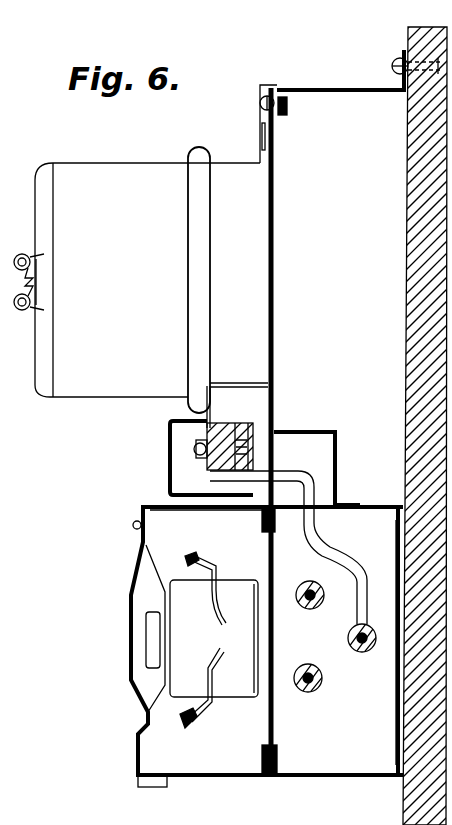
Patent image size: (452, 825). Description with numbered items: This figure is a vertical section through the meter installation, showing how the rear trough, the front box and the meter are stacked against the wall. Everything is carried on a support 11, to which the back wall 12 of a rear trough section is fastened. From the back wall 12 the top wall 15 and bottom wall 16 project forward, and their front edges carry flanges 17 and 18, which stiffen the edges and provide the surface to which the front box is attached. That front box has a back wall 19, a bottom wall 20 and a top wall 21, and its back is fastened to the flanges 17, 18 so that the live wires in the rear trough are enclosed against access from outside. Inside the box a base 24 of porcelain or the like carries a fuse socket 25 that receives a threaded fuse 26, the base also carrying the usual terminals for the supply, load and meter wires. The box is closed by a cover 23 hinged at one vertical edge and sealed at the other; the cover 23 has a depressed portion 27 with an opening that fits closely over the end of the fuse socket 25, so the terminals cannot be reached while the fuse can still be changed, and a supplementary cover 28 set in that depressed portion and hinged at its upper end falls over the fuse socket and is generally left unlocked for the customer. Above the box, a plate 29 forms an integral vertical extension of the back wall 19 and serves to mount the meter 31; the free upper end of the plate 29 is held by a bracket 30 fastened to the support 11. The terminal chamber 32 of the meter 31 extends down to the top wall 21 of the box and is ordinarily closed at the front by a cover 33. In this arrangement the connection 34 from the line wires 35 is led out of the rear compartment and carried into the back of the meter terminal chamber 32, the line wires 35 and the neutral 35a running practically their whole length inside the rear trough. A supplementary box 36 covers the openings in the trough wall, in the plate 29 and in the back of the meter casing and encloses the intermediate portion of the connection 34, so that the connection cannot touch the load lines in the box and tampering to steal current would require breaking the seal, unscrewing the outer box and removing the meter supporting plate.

The support 11 is at (408, 118).
The back wall 12 is at (403, 693).
The top wall 15 is at (340, 778).
The bottom wall 16 is at (368, 507).
The flange 17 is at (278, 762).
The flange 18 is at (276, 527).
The back wall 19 is at (276, 722).
The bottom wall 20 is at (202, 778).
The top wall 21 is at (175, 510).
The cover 23 is at (142, 758).
The base 24 is at (238, 698).
The fuse socket 25 is at (214, 638).
The threaded fuse 26 is at (147, 625).
The depressed portion 27 is at (168, 700).
The supplementary cover 28 is at (132, 655).
The plate 29 is at (277, 203).
The bracket 30 is at (300, 92).
The meter 31 is at (42, 190).
The terminal chamber 32 is at (248, 405).
The cover 33 is at (169, 450).
The connection 34 is at (330, 548).
The line wire 35 is at (327, 567).
The neutral 35a is at (348, 640).
The supplementary box 36 is at (337, 445).